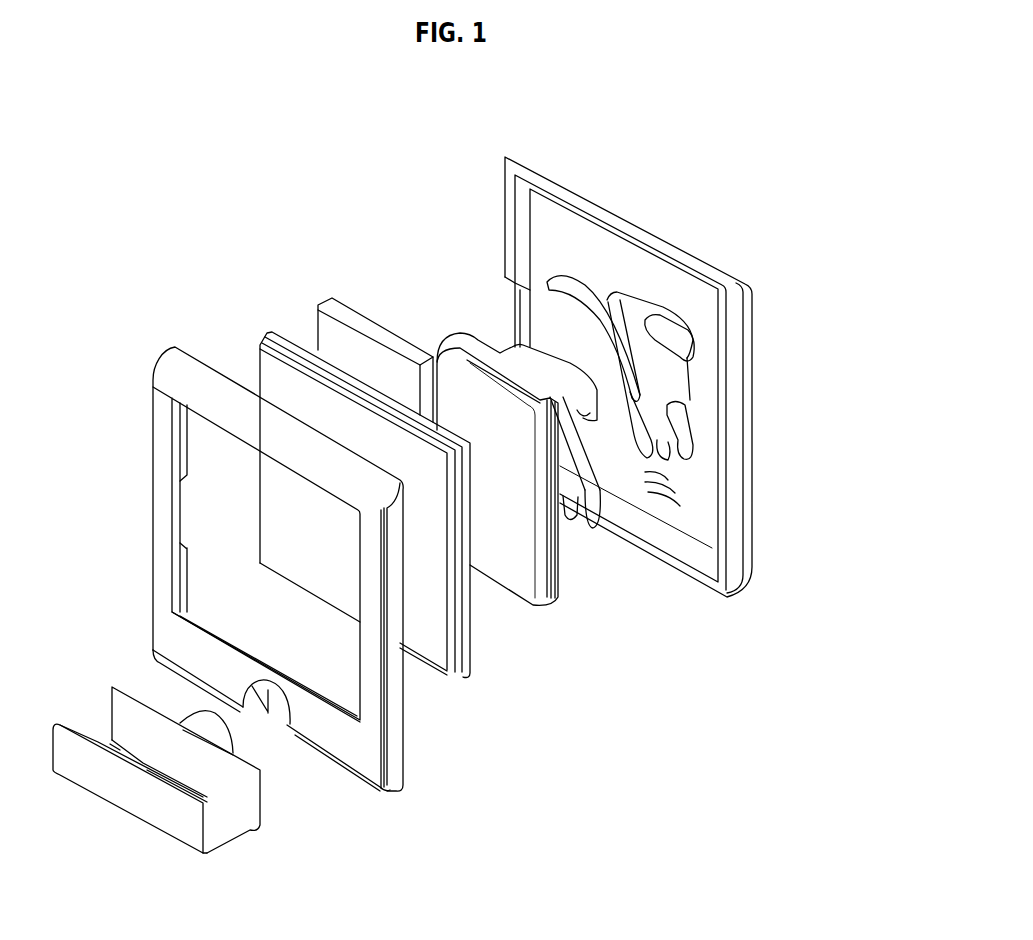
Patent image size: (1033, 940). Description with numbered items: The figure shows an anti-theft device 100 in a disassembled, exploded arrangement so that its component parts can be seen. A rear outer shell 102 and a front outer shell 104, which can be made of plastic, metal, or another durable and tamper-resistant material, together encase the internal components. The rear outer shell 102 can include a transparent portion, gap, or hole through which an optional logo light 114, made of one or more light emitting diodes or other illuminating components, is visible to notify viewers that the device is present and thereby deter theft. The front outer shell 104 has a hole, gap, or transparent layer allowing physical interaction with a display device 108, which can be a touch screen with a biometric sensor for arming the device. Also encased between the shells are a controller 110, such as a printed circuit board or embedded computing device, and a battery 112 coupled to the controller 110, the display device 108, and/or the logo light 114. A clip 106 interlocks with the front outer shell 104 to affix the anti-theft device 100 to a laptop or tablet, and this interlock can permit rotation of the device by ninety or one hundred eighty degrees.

The anti-theft device 100 is at (747, 129).
The rear outer shell 102 is at (521, 170).
The front outer shell 104 is at (403, 773).
The clip 106 is at (233, 837).
The display device 108 is at (470, 647).
The controller 110 is at (332, 326).
The battery 112 is at (545, 577).
The logo light 114 is at (461, 331).